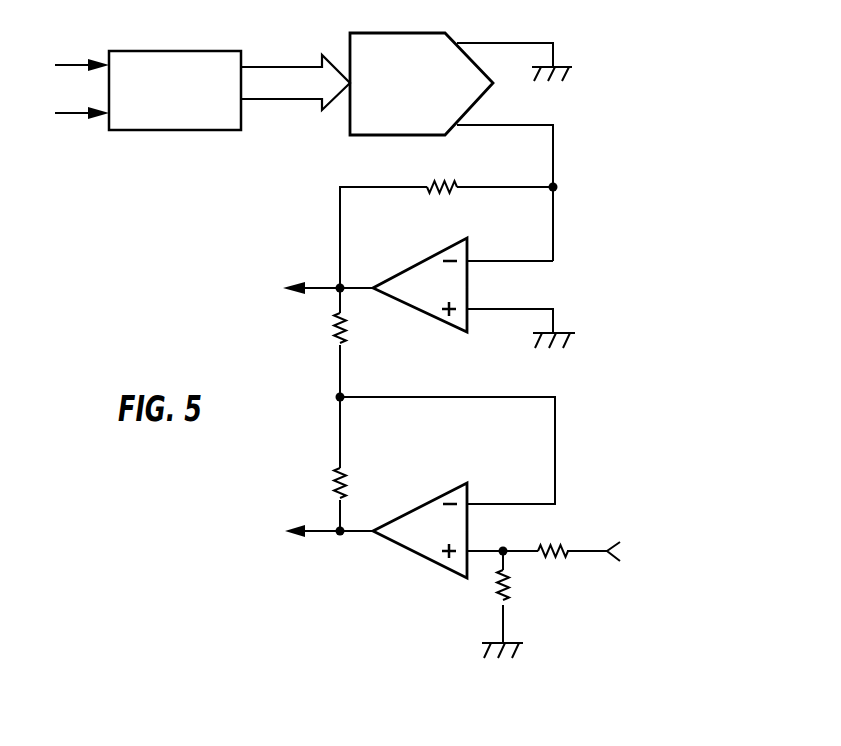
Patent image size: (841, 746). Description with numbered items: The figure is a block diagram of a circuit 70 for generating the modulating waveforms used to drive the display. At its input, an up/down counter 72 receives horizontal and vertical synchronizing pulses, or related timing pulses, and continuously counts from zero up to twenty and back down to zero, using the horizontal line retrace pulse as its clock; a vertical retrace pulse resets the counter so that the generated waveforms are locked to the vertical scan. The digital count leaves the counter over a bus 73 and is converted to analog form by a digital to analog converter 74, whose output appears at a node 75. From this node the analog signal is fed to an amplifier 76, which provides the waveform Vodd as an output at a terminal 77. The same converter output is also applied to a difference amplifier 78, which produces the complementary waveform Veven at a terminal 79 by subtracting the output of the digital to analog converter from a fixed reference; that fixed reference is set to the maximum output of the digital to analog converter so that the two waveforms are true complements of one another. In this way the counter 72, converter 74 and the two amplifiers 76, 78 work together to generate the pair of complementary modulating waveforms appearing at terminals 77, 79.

The scaling circuit 70 is at (281, 182).
The up/down counter 72 is at (186, 50).
The counter output bus 73 is at (302, 60).
The digital to analog converter 74 is at (394, 33).
The DAC output node 75 is at (562, 184).
The amplifier 76 is at (455, 332).
The terminal 77 is at (338, 286).
The difference amplifier 78 is at (449, 572).
The terminal 79 is at (338, 529).